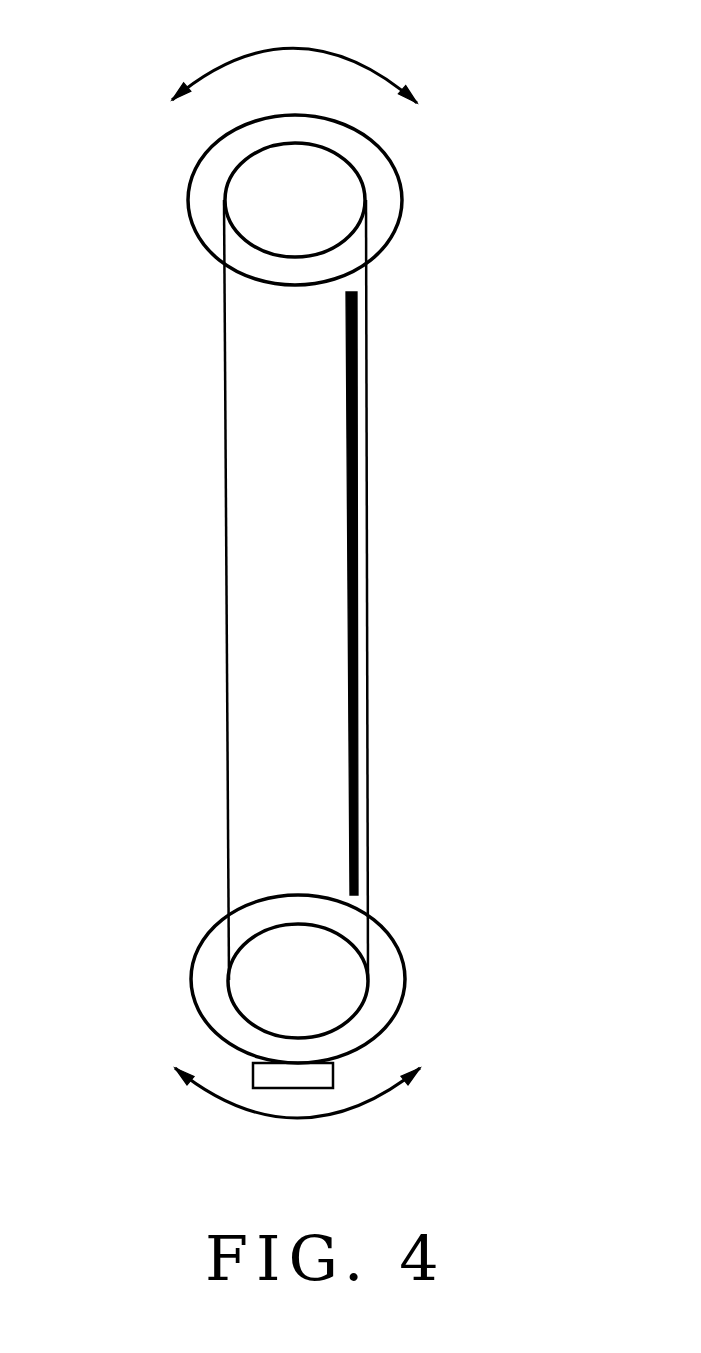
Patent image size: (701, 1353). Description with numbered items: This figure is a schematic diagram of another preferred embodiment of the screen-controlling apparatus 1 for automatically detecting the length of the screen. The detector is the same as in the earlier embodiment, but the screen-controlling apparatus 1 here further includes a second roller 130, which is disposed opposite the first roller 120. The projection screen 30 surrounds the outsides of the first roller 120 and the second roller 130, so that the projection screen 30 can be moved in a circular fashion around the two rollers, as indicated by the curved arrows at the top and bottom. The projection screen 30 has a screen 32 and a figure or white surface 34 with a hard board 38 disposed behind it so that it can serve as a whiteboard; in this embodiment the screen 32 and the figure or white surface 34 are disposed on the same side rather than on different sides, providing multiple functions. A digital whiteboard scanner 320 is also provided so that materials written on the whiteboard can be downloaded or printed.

The screen-controlling apparatus 1 is at (487, 77).
The projection screen 30 is at (325, 590).
The screen 32 is at (368, 667).
The figure or white surface 34 is at (223, 669).
The hard board 38 is at (357, 355).
The first roller 120 is at (243, 192).
The second roller 130 is at (338, 978).
The digital whiteboard scanner 320 is at (338, 1080).